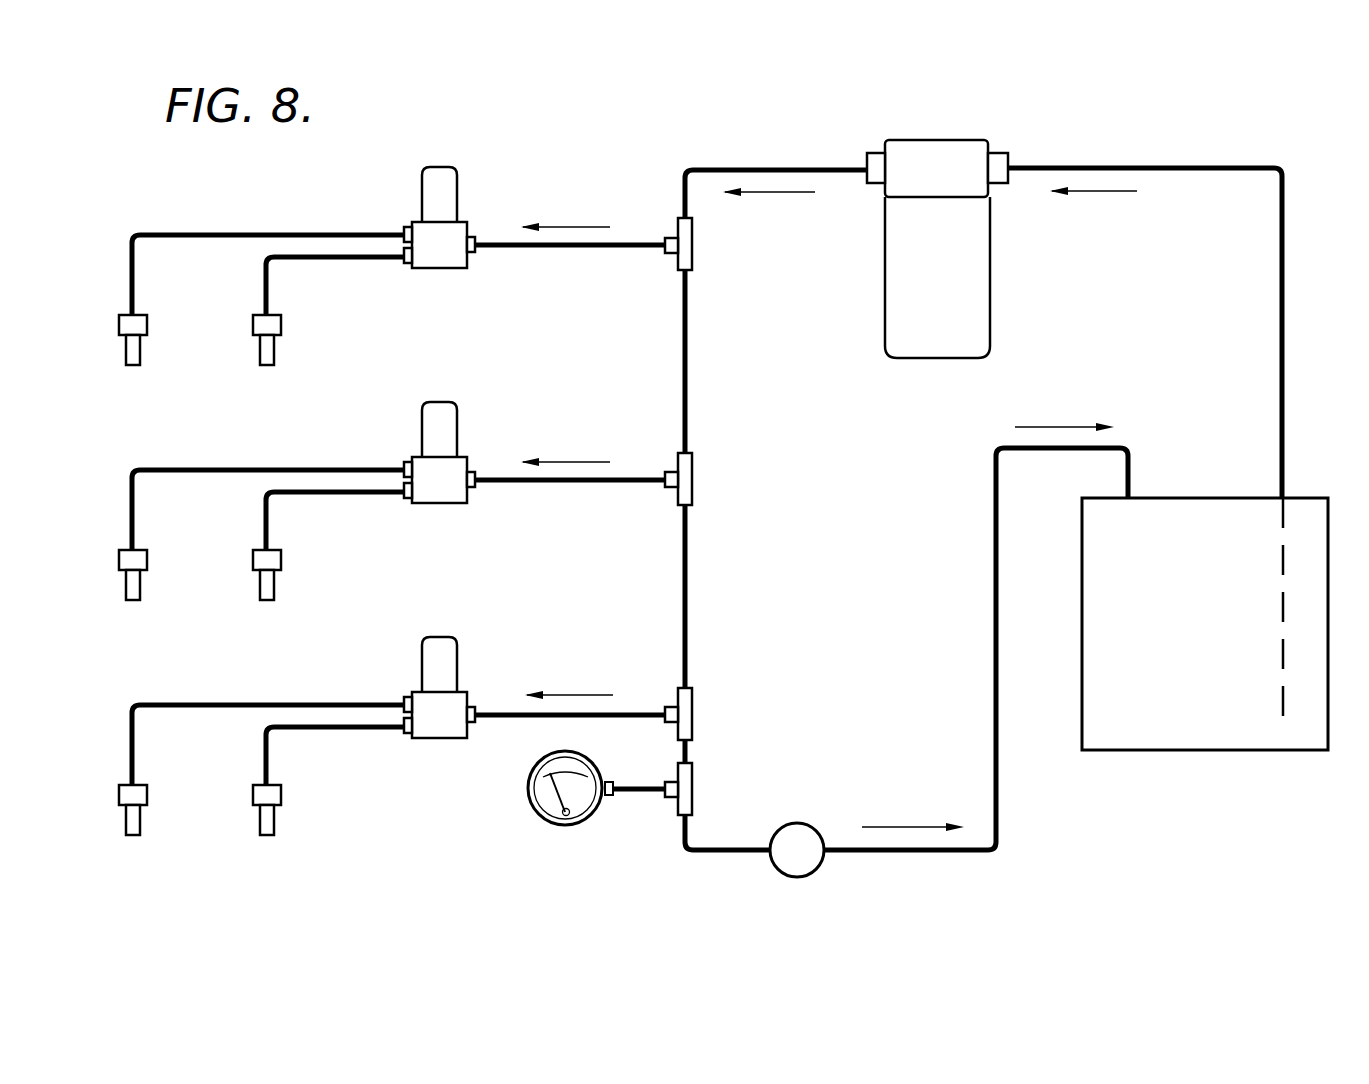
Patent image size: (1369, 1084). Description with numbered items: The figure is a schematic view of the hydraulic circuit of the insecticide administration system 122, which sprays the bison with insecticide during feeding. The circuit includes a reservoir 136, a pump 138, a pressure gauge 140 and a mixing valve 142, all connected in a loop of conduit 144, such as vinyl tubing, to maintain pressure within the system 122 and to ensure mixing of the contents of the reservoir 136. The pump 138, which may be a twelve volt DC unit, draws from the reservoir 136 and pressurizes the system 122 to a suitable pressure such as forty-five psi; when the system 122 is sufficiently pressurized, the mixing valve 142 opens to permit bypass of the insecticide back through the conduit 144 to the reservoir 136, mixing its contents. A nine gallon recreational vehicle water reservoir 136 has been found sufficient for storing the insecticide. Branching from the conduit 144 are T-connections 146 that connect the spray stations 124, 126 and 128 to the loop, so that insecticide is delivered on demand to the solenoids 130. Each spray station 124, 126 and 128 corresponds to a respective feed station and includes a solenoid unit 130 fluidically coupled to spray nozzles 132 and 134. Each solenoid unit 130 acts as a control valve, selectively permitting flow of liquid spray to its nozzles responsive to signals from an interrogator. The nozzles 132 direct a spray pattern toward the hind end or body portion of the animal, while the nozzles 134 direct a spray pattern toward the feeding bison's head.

The insecticide administration system 122 is at (1104, 152).
The spray station 124 is at (398, 312).
The spray station 126 is at (398, 546).
The spray station 128 is at (398, 781).
The solenoid unit 130 is at (445, 263).
The spray nozzle 132 is at (272, 350).
The spray nozzle 134 is at (133, 350).
The reservoir 136 is at (1216, 738).
The pump 138 is at (983, 326).
The pressure gauge 140 is at (550, 826).
The mixing valve 142 is at (790, 878).
The conduit 144 is at (996, 812).
The T-connection 146 is at (692, 238).